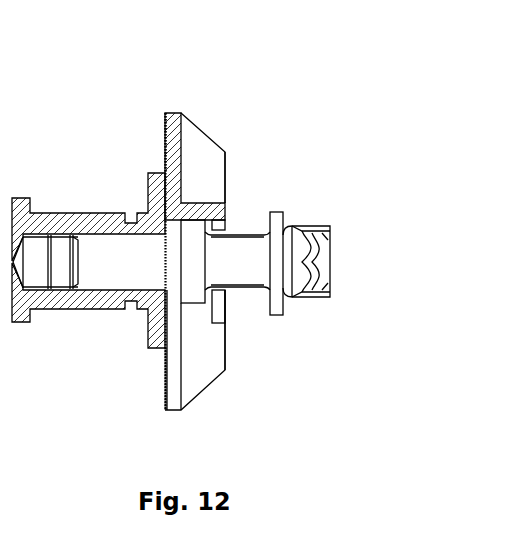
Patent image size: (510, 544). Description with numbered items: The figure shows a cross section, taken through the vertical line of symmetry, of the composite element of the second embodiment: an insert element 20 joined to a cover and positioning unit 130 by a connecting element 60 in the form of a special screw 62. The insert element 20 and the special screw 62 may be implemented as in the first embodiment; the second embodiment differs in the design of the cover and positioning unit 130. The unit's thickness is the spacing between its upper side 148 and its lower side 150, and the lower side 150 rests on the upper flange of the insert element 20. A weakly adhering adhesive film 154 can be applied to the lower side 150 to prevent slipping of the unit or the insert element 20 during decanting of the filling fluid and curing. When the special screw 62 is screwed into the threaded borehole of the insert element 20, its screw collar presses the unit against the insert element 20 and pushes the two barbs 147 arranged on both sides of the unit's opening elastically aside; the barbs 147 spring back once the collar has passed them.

The insert element 20 is at (54, 165).
The connecting element 60 is at (270, 181).
The special screw 62 is at (265, 330).
The cover and positioning unit 130 is at (227, 61).
The barb 147 is at (222, 222).
The upper side 148 is at (225, 190).
The lower side 150 is at (166, 375).
The adhesive film 154 is at (166, 132).